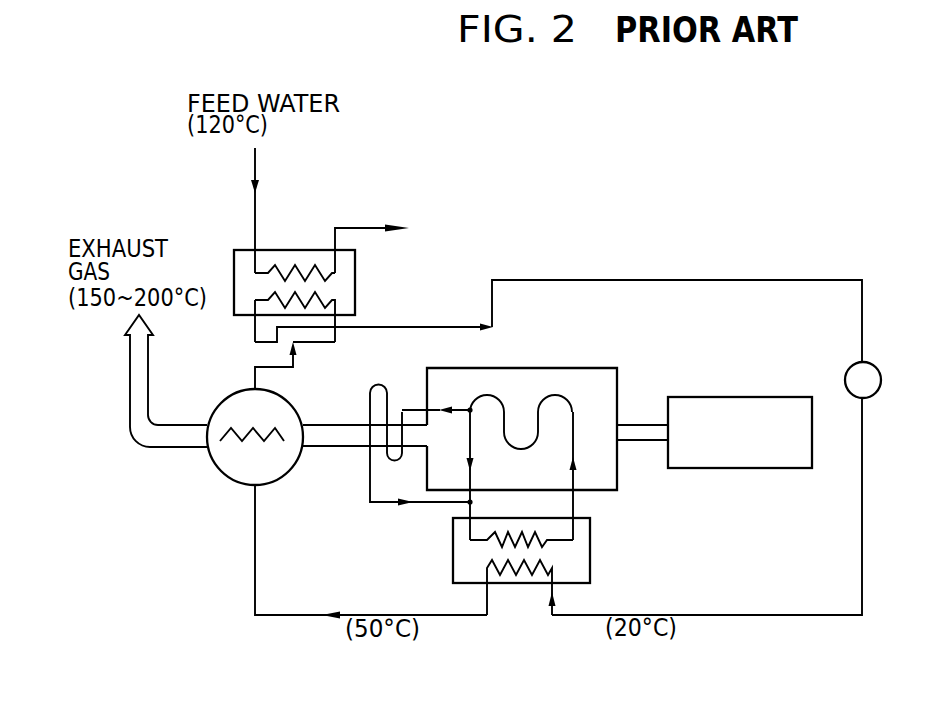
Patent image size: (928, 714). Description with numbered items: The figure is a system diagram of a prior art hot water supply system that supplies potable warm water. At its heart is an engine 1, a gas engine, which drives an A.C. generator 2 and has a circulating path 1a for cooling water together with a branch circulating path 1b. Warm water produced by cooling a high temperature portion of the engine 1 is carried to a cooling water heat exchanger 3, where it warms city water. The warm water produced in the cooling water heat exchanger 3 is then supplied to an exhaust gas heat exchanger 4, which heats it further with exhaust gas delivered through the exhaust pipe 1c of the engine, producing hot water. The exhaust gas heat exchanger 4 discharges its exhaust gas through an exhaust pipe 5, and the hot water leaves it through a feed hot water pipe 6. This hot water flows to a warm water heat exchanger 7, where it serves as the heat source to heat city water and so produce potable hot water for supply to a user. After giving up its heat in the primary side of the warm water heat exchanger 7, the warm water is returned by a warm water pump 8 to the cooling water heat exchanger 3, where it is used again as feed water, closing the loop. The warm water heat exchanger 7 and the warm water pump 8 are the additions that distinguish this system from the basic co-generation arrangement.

The engine 1 is at (585, 368).
The circulating path for cooling water 1a is at (575, 502).
The branch circulating path 1b is at (413, 411).
The exhaust pipe 1c is at (340, 424).
The A.C. generator 2 is at (775, 397).
The cooling water heat exchanger 3 is at (590, 547).
The exhaust gas heat exchanger 4 is at (222, 470).
The exhaust pipe for exhaust gas 5 is at (130, 373).
The feed hot water pipe 6 is at (378, 230).
The warm water heat exchanger 7 is at (300, 250).
The warm water pump 8 is at (878, 364).